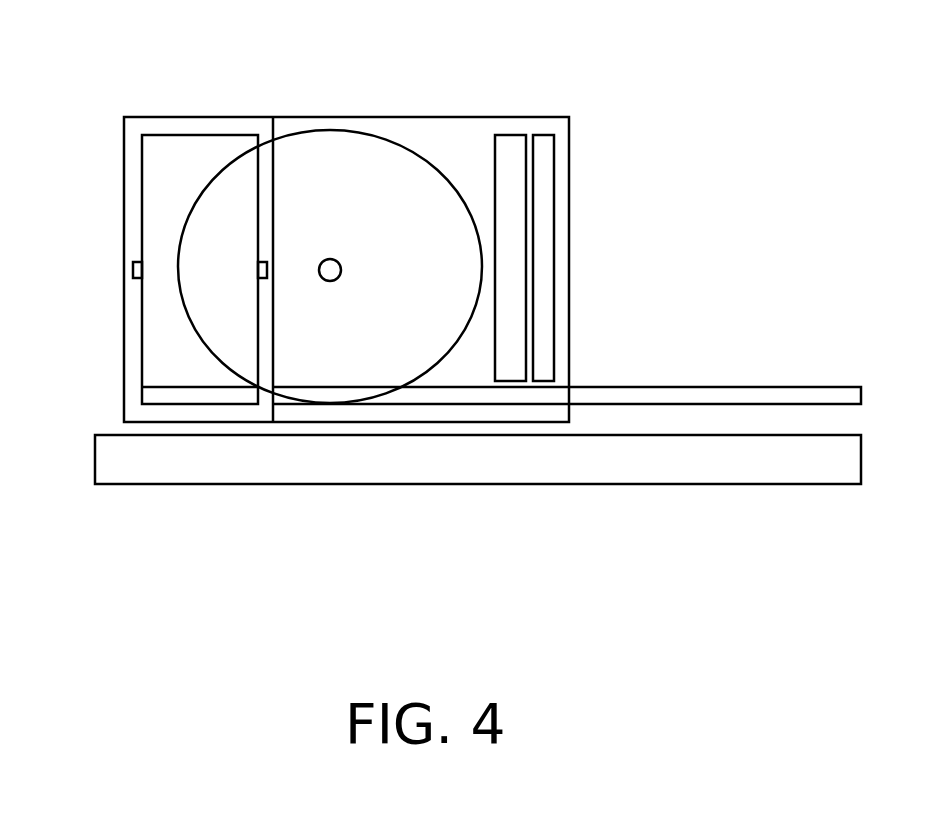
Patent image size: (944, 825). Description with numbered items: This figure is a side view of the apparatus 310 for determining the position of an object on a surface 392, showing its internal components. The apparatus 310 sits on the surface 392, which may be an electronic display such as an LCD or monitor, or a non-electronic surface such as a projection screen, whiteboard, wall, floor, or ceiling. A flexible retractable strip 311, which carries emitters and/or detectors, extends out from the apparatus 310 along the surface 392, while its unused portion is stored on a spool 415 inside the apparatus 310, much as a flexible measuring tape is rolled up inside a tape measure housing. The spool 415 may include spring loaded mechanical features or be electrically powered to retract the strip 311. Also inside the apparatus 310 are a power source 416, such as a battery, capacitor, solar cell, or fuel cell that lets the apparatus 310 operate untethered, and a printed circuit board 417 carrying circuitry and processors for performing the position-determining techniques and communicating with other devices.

The apparatus 310 is at (200, 108).
The flexible retractable strip 311 is at (734, 378).
The surface 392 is at (755, 456).
The spool 415 is at (346, 364).
The power source 416 is at (516, 175).
The printed circuit board (PCB) 417 is at (547, 246).